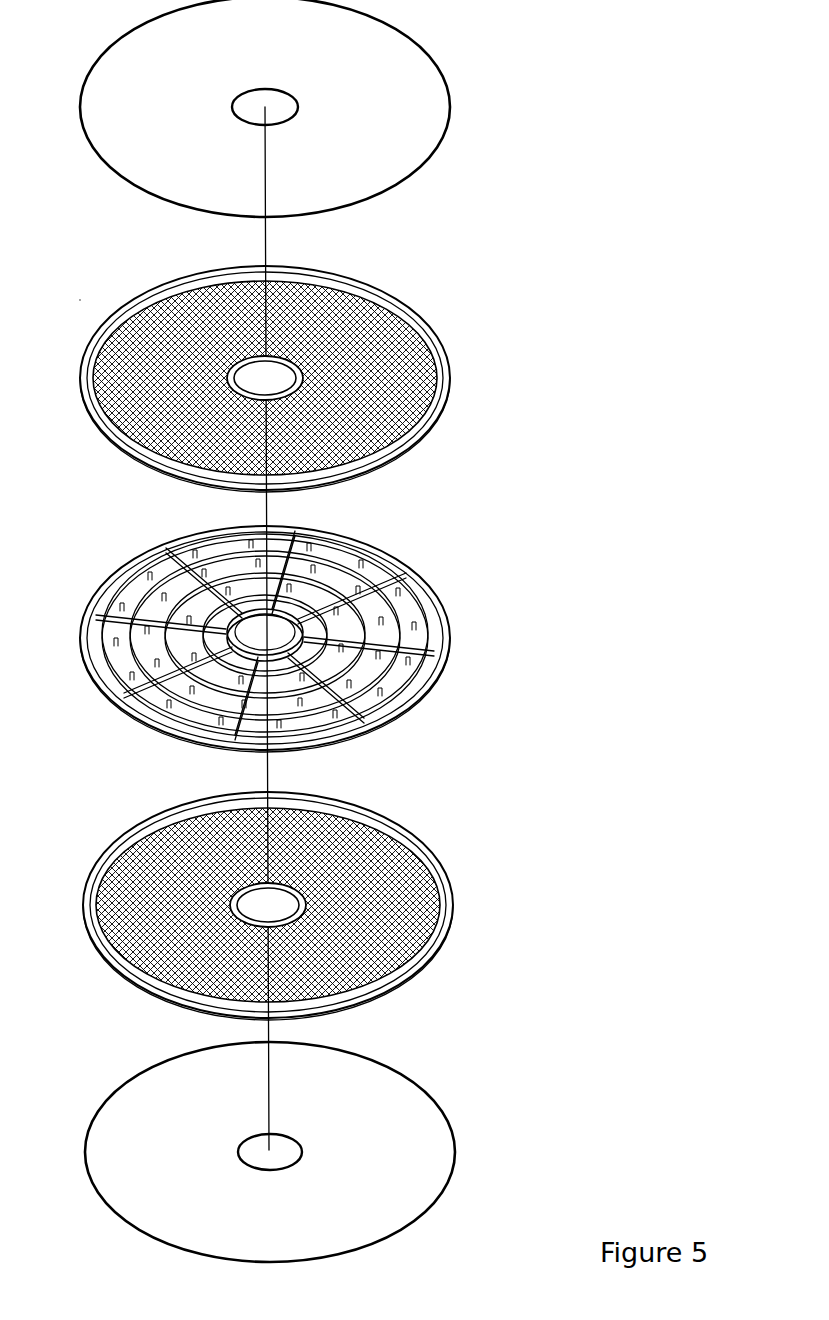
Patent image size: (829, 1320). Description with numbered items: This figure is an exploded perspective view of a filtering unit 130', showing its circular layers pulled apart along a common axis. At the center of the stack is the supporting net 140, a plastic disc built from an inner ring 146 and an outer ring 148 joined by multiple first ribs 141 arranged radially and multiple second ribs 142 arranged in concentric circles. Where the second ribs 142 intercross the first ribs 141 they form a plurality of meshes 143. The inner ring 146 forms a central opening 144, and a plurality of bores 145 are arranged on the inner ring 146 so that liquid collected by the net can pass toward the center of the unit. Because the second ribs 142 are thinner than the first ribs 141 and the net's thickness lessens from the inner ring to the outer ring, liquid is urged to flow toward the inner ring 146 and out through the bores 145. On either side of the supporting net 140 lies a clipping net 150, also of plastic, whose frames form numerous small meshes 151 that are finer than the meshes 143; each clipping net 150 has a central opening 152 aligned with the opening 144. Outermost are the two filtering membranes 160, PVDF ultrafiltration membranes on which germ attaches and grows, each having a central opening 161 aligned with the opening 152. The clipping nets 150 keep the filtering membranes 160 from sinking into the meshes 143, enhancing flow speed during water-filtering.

The filtering unit 130' is at (404, 191).
The supporting net 140 is at (302, 648).
The first ribs 141 is at (440, 658).
The second ribs 142 is at (163, 707).
The meshes 143 is at (410, 665).
The opening 144 is at (165, 613).
The bores 145 is at (107, 678).
The inner ring 146 is at (320, 555).
The outer ring 148 is at (418, 576).
The clipping net 150 is at (352, 634).
The meshes 151 is at (410, 402).
The opening 152 is at (300, 378).
The filtering membrane 160 is at (348, 631).
The opening 161 is at (280, 107).